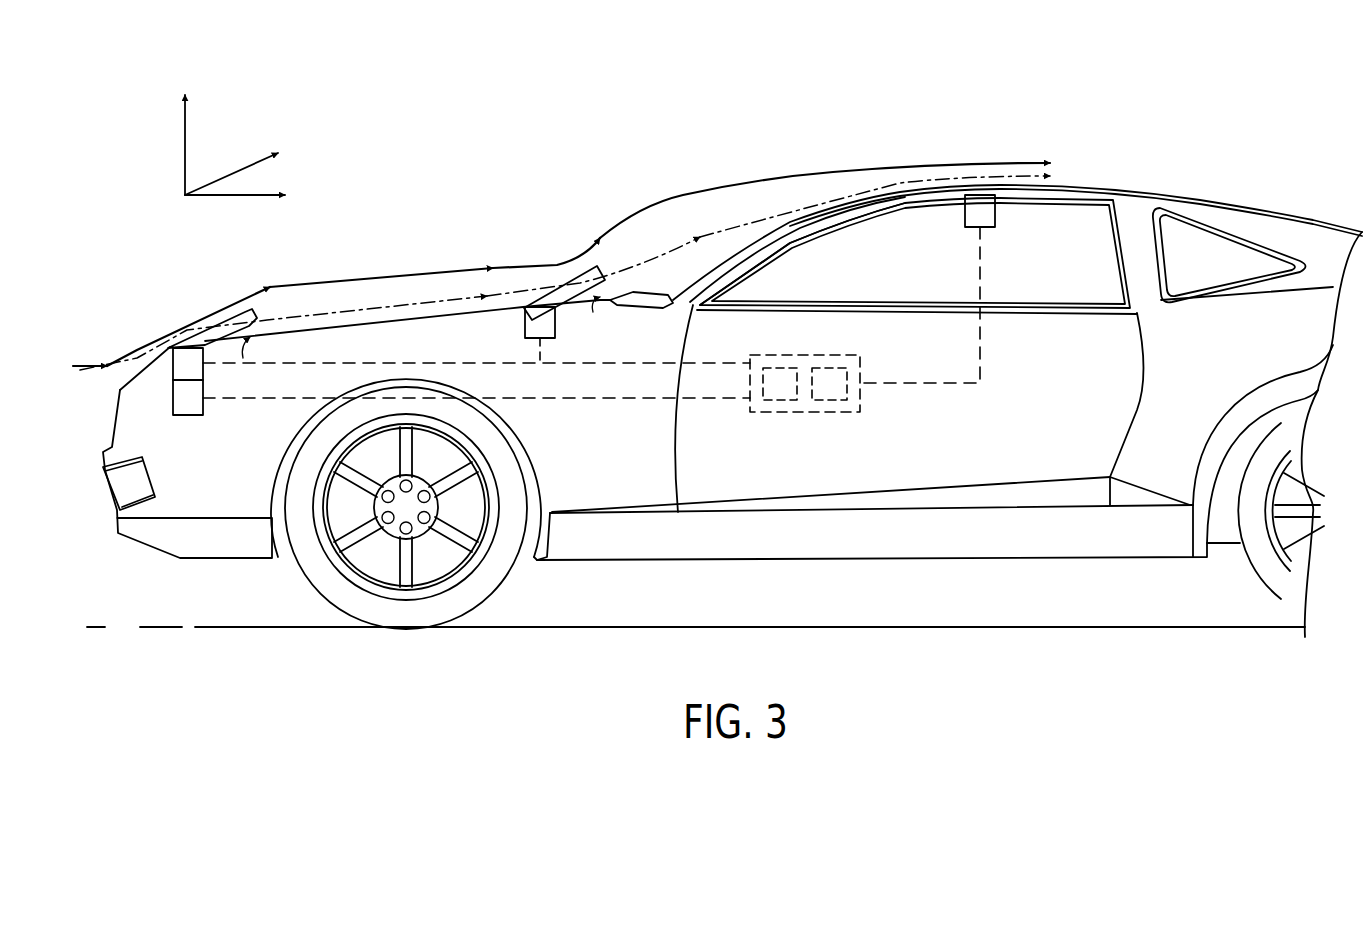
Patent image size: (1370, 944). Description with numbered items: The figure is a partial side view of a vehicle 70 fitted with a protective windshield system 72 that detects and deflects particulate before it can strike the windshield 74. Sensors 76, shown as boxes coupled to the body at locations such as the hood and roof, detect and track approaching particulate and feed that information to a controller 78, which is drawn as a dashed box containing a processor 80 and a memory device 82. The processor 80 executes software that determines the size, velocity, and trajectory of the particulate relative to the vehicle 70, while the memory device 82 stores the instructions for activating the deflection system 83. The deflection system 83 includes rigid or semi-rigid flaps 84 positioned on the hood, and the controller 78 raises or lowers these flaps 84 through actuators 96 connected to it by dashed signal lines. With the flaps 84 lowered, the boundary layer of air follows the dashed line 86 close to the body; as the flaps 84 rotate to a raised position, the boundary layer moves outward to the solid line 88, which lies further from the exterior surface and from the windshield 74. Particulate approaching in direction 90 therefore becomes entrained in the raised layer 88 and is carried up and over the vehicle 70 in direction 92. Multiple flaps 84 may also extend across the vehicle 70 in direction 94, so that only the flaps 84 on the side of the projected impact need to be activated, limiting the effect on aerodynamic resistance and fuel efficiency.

The vehicle 70 is at (893, 661).
The protective windshield system 72 is at (532, 658).
The windshield 74 is at (770, 244).
The sensors 76 is at (188, 416).
The controller 78 is at (813, 397).
The processor 80 is at (777, 404).
The memory device 82 is at (832, 404).
The deflection system 83 is at (380, 137).
The flaps 84 is at (205, 325).
The dashed line 86 is at (83, 373).
The solid line 88 is at (830, 172).
The direction 90 is at (228, 197).
The direction 92 is at (182, 143).
The direction 94 is at (240, 168).
The actuators 96 is at (172, 368).